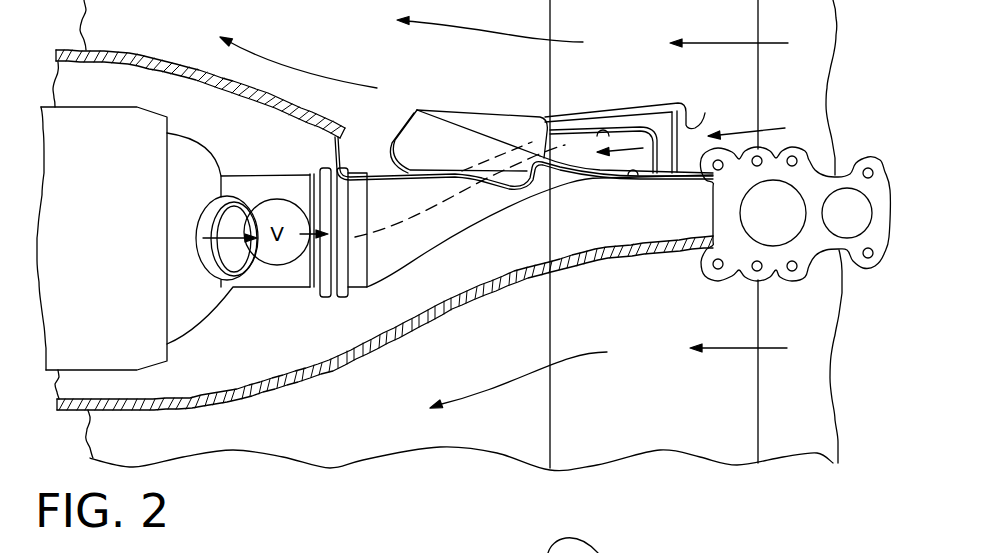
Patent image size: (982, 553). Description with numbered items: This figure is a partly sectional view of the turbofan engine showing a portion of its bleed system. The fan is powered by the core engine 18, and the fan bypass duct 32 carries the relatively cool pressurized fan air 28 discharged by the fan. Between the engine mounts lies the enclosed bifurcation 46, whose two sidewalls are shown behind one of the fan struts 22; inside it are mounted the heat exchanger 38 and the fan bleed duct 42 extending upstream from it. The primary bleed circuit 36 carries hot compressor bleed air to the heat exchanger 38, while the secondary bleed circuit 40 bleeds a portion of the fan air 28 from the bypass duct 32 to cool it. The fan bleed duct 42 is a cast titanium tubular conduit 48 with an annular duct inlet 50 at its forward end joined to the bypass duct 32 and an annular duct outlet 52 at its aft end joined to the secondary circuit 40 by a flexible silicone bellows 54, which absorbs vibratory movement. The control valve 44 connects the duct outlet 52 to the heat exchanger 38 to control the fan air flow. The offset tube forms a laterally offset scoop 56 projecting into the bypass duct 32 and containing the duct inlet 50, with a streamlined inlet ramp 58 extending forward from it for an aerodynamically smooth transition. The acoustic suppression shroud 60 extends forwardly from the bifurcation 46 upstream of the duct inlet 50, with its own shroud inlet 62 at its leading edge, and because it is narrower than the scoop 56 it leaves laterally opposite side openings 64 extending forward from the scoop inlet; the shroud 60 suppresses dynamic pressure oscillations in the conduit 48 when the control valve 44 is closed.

The core engine 18 is at (356, 35).
The fan strut 22 is at (838, 175).
The fan air 28 is at (740, 346).
The fan bypass duct 32 is at (648, 407).
The primary bleed circuit 36 is at (233, 281).
The heat exchanger 38 is at (86, 326).
The secondary bleed circuit 40 is at (230, 175).
The fan bleed duct 42 is at (410, 267).
The control valve 44 is at (272, 198).
The bifurcation 46 is at (160, 54).
The tubular conduit 48 is at (450, 212).
The duct inlet 50 is at (576, 170).
The duct outlet 52 is at (345, 299).
The flexible silicone bellows 54 is at (311, 293).
The scoop 56 is at (503, 111).
The inlet ramp 58 is at (647, 174).
The acoustic suppression shroud 60 is at (632, 107).
The shroud inlet 62 is at (690, 127).
The side openings 64 is at (607, 133).